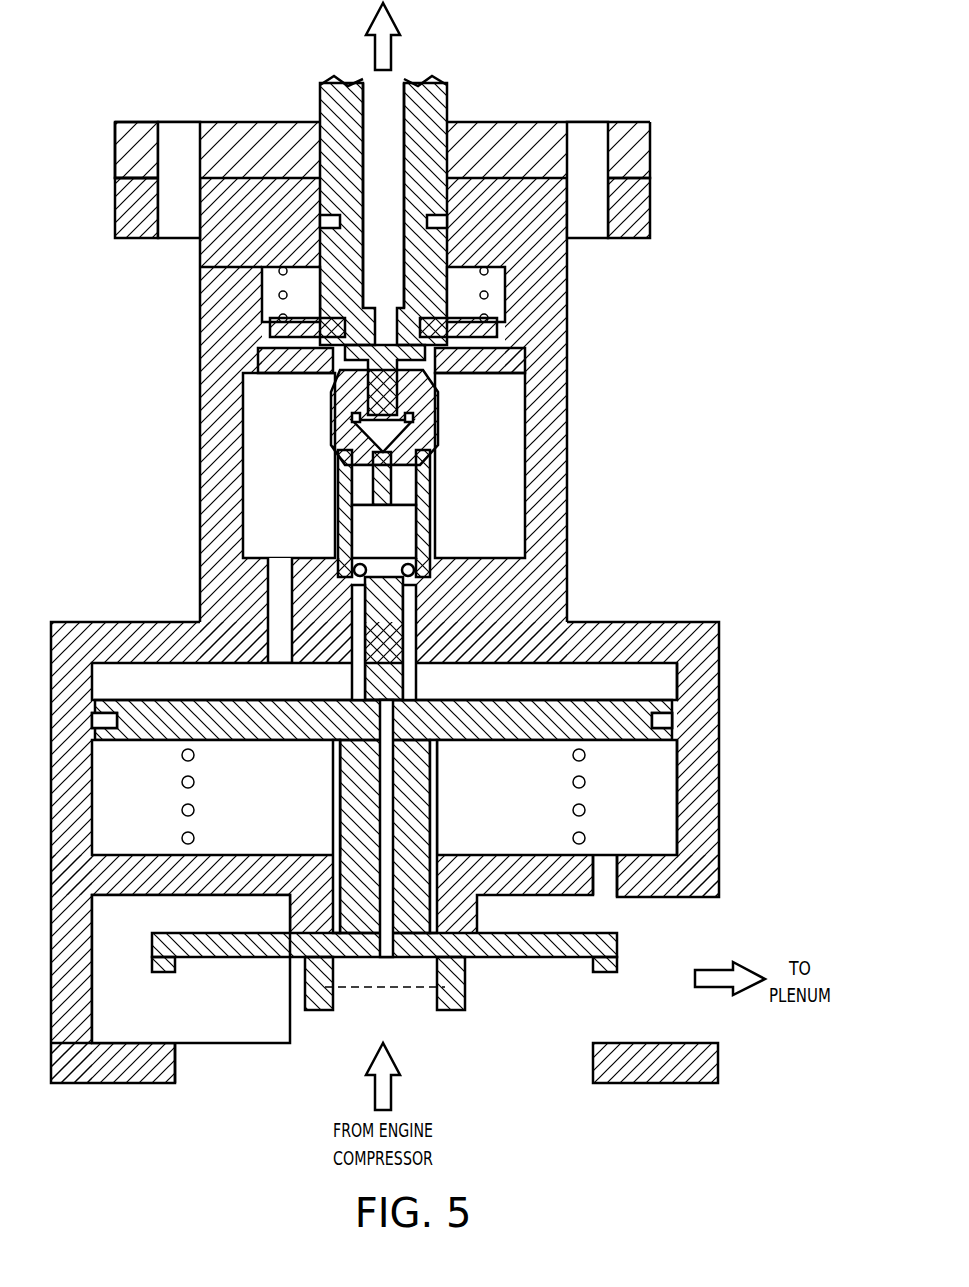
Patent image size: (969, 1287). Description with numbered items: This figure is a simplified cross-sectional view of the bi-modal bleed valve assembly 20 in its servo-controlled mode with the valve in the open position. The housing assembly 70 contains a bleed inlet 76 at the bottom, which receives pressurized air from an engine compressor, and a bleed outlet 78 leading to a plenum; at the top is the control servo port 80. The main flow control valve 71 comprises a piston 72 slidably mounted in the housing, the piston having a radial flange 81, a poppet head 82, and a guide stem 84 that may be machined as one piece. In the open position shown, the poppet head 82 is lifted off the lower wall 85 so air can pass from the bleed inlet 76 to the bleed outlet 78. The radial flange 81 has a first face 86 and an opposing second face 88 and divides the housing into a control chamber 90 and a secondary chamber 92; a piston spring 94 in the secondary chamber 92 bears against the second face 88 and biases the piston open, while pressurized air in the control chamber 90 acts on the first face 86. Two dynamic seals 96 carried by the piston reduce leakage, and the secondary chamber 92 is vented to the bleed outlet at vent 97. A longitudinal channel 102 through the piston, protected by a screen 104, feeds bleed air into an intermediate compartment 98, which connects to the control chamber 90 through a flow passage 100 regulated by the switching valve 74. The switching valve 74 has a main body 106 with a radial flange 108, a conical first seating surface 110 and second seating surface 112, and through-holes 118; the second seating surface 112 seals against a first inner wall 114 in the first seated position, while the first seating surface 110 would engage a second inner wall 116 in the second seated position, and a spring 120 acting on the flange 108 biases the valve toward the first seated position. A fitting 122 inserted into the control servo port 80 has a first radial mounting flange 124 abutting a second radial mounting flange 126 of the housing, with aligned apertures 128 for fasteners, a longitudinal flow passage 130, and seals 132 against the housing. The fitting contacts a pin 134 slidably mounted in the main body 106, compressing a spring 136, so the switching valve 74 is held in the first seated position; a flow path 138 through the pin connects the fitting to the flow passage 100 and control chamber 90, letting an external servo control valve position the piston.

The bi-modal bleed valve assembly 20 is at (712, 143).
The housing assembly 70 is at (567, 580).
The main flow control valve 71 is at (110, 833).
The piston 72 is at (432, 776).
The switching valve 74 is at (399, 409).
The bleed inlet 76 is at (175, 1072).
The bleed outlet 78 is at (719, 895).
The control servo port 80 is at (330, 178).
The radial flange 81 is at (265, 740).
The poppet head 82 is at (262, 957).
The guide stem 84 is at (368, 675).
The lower wall 85 is at (155, 1043).
The first face 86 is at (470, 692).
The second face 88 is at (490, 740).
The control chamber 90 is at (690, 672).
The secondary chamber 92 is at (665, 780).
The piston spring 94 is at (183, 782).
The dynamic seals 96 is at (355, 565).
The vent 97 is at (610, 895).
The intermediate compartment 98 is at (368, 541).
The flow passage 100 is at (255, 505).
The longitudinal channel 102 is at (350, 790).
The screen 104 is at (405, 992).
The main body 106 is at (430, 418).
The radial flange 108 is at (440, 320).
The first seating surface 110 is at (432, 378).
The second seating surface 112 is at (340, 455).
The first inner wall 114 is at (420, 465).
The second inner wall 116 is at (308, 375).
The through-holes 118 is at (405, 495).
The spring 120 is at (280, 292).
The fitting 122 is at (500, 140).
The first radial mounting flange 124 is at (118, 145).
The second radial mounting flange 126 is at (118, 200).
The apertures 128 is at (178, 130).
The longitudinal flow passage 130 is at (395, 160).
The seals 132 is at (320, 222).
The pin 134 is at (330, 320).
The spring 136 is at (350, 424).
The flow path 138 is at (440, 325).